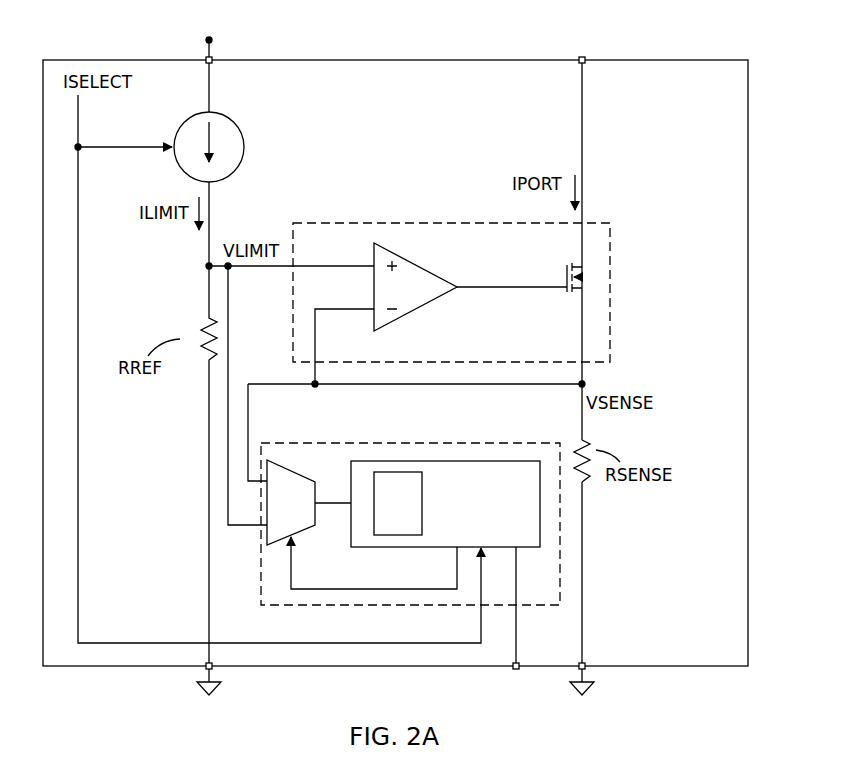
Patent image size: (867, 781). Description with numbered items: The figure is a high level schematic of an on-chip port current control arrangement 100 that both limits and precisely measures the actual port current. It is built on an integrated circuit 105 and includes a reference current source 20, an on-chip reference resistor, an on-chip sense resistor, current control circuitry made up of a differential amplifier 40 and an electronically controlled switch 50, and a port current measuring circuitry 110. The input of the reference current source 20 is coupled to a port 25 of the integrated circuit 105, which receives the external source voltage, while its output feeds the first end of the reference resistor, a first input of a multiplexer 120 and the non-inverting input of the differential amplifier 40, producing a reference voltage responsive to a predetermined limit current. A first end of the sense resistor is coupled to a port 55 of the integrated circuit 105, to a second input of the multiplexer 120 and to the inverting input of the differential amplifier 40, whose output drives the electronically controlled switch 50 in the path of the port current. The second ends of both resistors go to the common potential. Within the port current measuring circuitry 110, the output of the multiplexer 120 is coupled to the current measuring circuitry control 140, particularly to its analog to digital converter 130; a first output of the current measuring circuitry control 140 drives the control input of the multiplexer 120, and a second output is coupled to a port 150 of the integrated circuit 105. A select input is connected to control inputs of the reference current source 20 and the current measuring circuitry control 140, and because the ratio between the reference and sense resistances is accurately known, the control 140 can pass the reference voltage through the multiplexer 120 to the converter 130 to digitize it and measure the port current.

The reference current source 20 is at (234, 120).
The port 25 is at (212, 58).
The differential amplifier 40 is at (418, 263).
The electronically controlled switch 50 is at (577, 293).
The port 55 is at (582, 58).
The on-chip port current control arrangement 100 is at (689, 38).
The integrated circuit 105 is at (748, 168).
The port current measuring circuitry 110 is at (386, 443).
The multiplexer 120 is at (292, 470).
The analog to digital converter 130 is at (398, 535).
The current measuring circuitry control 140 is at (480, 461).
The port 150 is at (516, 669).